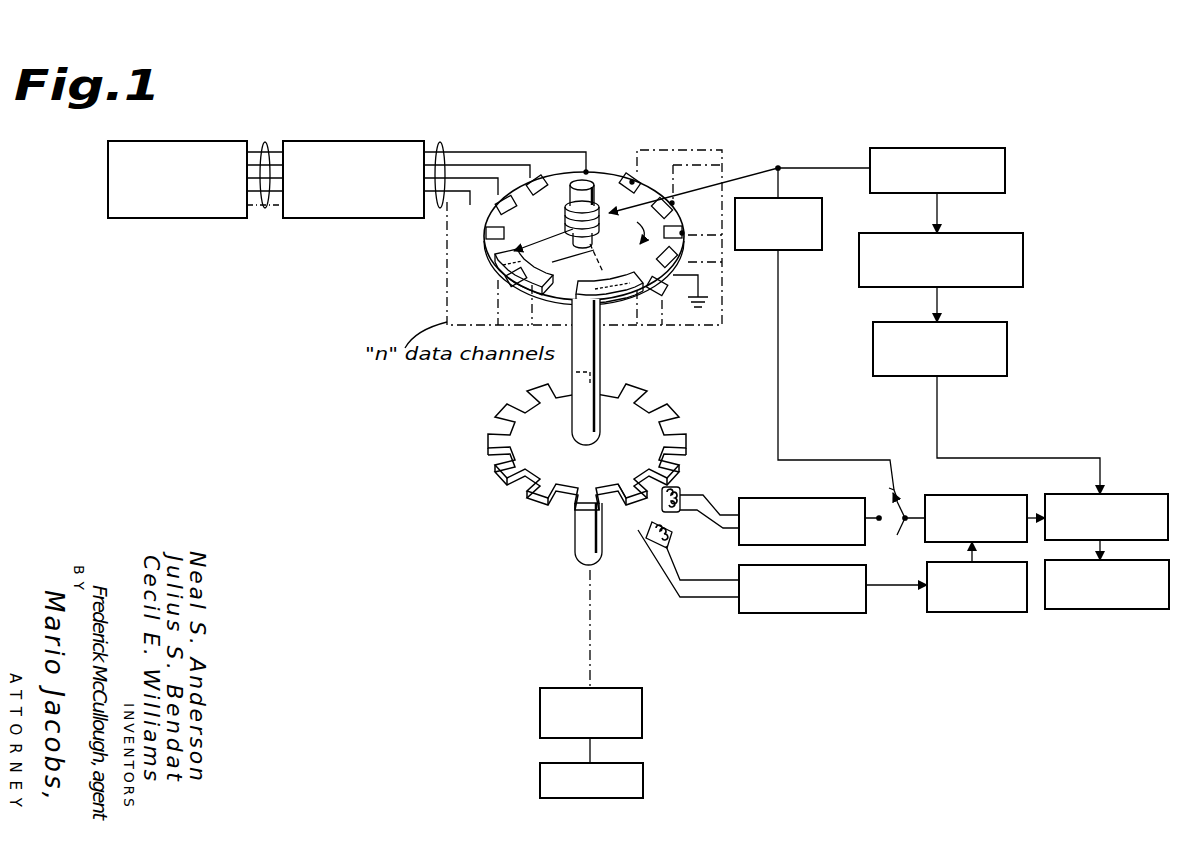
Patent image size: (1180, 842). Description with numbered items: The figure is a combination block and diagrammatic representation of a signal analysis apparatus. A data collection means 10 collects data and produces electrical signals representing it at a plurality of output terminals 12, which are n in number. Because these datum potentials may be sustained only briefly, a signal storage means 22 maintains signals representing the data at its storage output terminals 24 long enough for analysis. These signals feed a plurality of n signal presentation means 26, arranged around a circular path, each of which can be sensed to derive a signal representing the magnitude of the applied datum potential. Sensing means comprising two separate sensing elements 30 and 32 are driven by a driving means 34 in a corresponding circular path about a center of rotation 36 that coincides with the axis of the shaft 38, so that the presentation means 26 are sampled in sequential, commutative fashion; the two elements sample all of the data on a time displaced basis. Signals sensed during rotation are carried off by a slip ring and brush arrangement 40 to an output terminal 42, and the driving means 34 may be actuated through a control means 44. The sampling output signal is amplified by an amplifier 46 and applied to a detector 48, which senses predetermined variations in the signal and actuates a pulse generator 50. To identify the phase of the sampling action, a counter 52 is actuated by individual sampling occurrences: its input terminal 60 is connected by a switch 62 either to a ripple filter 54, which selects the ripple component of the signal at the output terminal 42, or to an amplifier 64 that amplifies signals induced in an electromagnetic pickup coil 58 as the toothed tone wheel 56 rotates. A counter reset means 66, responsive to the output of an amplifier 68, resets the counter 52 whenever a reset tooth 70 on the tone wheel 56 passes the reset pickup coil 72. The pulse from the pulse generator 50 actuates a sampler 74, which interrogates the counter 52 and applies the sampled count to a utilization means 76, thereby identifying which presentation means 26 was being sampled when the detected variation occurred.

The data collection means 10 is at (219, 141).
The output terminals 12 is at (268, 152).
The signal storage means 22 is at (385, 141).
The storage output terminals 24 is at (444, 150).
The signal presentation means 26 is at (632, 181).
The sensing element 30 is at (505, 278).
The sensing element 32 is at (617, 302).
The driving means 34 is at (642, 717).
The center of rotation 36 is at (592, 578).
The shaft 38 is at (568, 195).
The slip ring and brush arrangement 40 is at (584, 238).
The output terminal 42 is at (779, 166).
The control means 44 is at (643, 780).
The amplifier 46 is at (1000, 148).
The detector 48 is at (1023, 278).
The pulse generator 50 is at (1007, 350).
The counter 52 is at (1000, 495).
The ripple filter 54 is at (810, 252).
The toothed tone wheel 56 is at (493, 430).
The electromagnetic pickup coil 58 is at (672, 501).
The input terminal 60 is at (900, 527).
The switch 62 is at (905, 508).
The amplifier 64 is at (822, 498).
The counter reset means 66 is at (1000, 612).
The amplifier 68 is at (828, 613).
The reset tooth 70 is at (642, 503).
The reset pickup coil 72 is at (672, 534).
The sampler 74 is at (1165, 494).
The utilization means 76 is at (1142, 610).